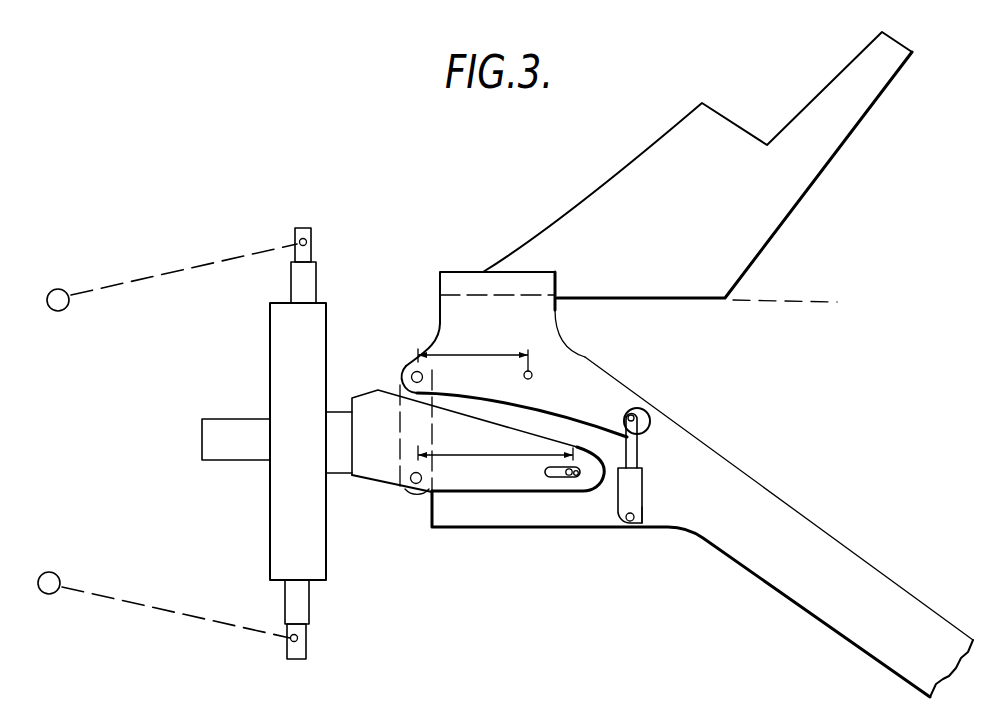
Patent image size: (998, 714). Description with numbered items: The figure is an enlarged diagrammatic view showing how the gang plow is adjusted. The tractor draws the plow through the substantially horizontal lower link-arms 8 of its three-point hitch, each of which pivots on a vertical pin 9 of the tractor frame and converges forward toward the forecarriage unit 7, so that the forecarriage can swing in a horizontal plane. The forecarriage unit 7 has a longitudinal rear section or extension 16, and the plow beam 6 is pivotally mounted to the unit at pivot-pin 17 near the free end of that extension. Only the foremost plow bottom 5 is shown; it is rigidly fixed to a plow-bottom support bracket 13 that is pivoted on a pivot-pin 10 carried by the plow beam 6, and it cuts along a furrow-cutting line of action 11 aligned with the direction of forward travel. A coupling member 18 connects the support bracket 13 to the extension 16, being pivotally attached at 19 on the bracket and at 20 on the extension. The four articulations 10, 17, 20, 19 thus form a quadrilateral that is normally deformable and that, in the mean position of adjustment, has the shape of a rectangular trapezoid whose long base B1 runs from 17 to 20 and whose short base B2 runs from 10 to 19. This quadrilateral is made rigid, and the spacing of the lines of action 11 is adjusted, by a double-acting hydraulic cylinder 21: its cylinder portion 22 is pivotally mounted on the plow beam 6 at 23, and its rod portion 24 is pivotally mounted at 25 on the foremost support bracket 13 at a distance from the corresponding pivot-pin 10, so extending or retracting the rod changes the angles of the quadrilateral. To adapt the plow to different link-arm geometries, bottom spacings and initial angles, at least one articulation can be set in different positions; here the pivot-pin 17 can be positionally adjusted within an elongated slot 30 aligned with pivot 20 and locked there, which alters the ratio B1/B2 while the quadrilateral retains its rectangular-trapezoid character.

The plow bottom 5 is at (801, 110).
The plow beam 6 is at (787, 523).
The forecarriage unit 7 is at (368, 383).
The link-arm 8 is at (172, 269).
The vertical pin 9 is at (66, 307).
The pivot-pin 10 is at (531, 372).
The line of action 11 is at (808, 298).
The plow-bottom support bracket 13 is at (598, 380).
The rear section or extension 16 is at (383, 475).
The pivot-pin 17 is at (561, 479).
The coupling member 18 is at (402, 391).
The pivotal attachment 19 is at (415, 369).
The pivotal attachment 20 is at (413, 487).
The double-acting hydraulic cylinder 21 is at (650, 484).
The cylinder portion 22 is at (642, 507).
The pivotal mounting 23 is at (632, 523).
The rod portion 24 is at (637, 442).
The pivotal mounting 25 is at (634, 415).
The elongated slot 30 is at (590, 488).
The long base of the rectangular trapezoid B1 is at (477, 440).
The short base of the rectangular trapezoid B2 is at (462, 350).